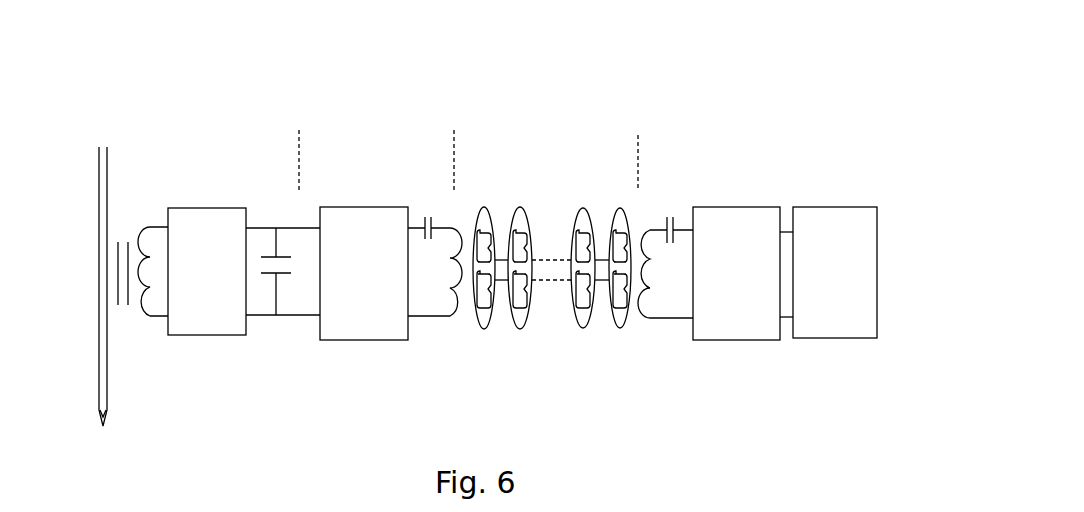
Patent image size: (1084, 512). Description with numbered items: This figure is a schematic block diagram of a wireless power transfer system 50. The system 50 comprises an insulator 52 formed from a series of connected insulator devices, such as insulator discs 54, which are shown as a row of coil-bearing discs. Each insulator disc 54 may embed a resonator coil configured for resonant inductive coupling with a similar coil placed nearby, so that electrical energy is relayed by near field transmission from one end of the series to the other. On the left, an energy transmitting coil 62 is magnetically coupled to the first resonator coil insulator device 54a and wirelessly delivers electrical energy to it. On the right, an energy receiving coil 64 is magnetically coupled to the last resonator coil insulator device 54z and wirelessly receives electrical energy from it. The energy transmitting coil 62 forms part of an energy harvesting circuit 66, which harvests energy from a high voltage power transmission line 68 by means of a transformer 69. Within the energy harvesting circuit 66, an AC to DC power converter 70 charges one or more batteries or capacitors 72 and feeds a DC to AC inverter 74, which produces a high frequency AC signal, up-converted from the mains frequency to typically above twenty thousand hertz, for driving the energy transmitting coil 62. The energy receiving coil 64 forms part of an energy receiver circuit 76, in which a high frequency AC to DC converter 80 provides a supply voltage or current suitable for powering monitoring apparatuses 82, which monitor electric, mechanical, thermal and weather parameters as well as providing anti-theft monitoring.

The wireless power transfer system 50 is at (667, 86).
The insulator 52 is at (560, 298).
The insulator discs 54 is at (582, 206).
The first resonator coil insulator device 54a is at (485, 207).
The last resonator coil insulator device 54z is at (621, 208).
The energy transmitting coil 62 is at (456, 228).
The energy receiving coil 64 is at (648, 232).
The energy harvesting circuit 66 is at (285, 150).
The high voltage power transmission line 68 is at (114, 368).
The transformer 69 is at (138, 218).
The AC to DC power converter 70 is at (207, 271).
The batteries or capacitors 72 is at (262, 337).
The DC to AC inverter 74 is at (364, 273).
The energy receiver circuit 76 is at (782, 165).
The high frequency AC to DC converter 80 is at (736, 273).
The monitoring apparatuses 82 is at (835, 272).